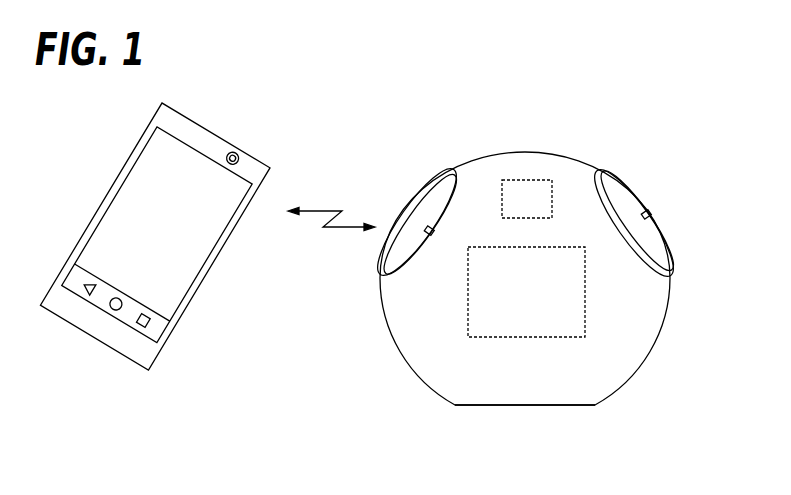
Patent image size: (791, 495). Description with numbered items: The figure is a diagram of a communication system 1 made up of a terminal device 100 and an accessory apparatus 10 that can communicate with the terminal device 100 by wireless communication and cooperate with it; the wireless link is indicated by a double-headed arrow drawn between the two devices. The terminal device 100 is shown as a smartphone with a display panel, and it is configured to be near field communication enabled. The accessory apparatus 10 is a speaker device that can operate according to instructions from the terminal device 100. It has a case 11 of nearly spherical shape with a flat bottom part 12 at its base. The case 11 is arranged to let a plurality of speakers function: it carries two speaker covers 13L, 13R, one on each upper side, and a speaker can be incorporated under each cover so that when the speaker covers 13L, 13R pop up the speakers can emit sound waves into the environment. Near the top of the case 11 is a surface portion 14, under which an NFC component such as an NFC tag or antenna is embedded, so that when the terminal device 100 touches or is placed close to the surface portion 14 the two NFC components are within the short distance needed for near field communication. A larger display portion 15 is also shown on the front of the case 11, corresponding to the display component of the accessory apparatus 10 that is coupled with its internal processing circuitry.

The communication system 1 is at (433, 45).
The accessory apparatus 10 is at (588, 124).
The case 11 is at (652, 352).
The bottom part 12 is at (555, 408).
The speaker cover 13L is at (407, 192).
The speaker cover 13R is at (647, 192).
The surface portion 14 is at (522, 178).
The display portion 15 is at (587, 305).
The terminal device 100 is at (212, 132).